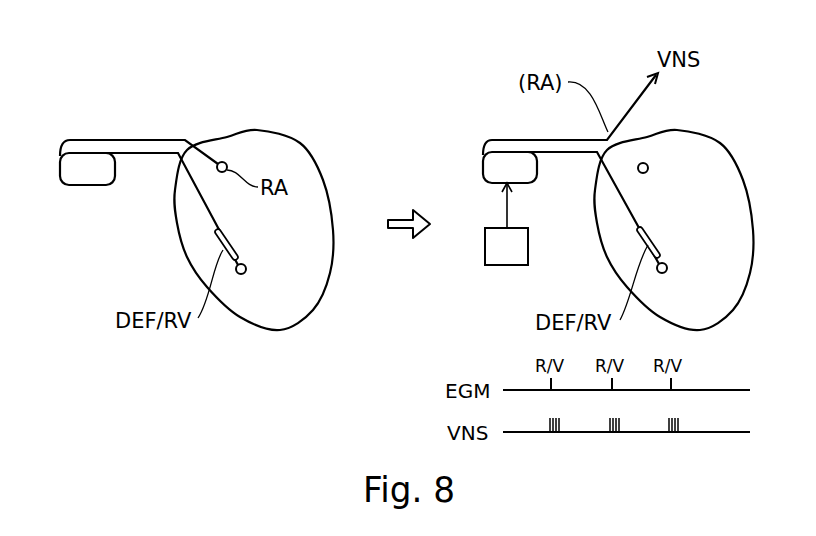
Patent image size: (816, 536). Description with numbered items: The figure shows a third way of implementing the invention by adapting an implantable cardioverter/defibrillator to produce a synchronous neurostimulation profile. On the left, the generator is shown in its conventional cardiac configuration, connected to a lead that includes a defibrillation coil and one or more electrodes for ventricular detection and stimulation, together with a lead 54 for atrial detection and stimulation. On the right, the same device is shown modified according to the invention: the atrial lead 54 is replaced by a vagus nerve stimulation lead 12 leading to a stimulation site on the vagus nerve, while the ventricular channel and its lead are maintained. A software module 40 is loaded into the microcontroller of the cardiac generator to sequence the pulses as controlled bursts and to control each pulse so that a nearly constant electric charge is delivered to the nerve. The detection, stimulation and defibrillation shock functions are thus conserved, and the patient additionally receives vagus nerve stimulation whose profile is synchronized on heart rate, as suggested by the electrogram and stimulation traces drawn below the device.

The lead for atrial detection/stimulation 54 is at (207, 156).
The VNS lead 12 is at (640, 95).
The software module 40 is at (495, 266).